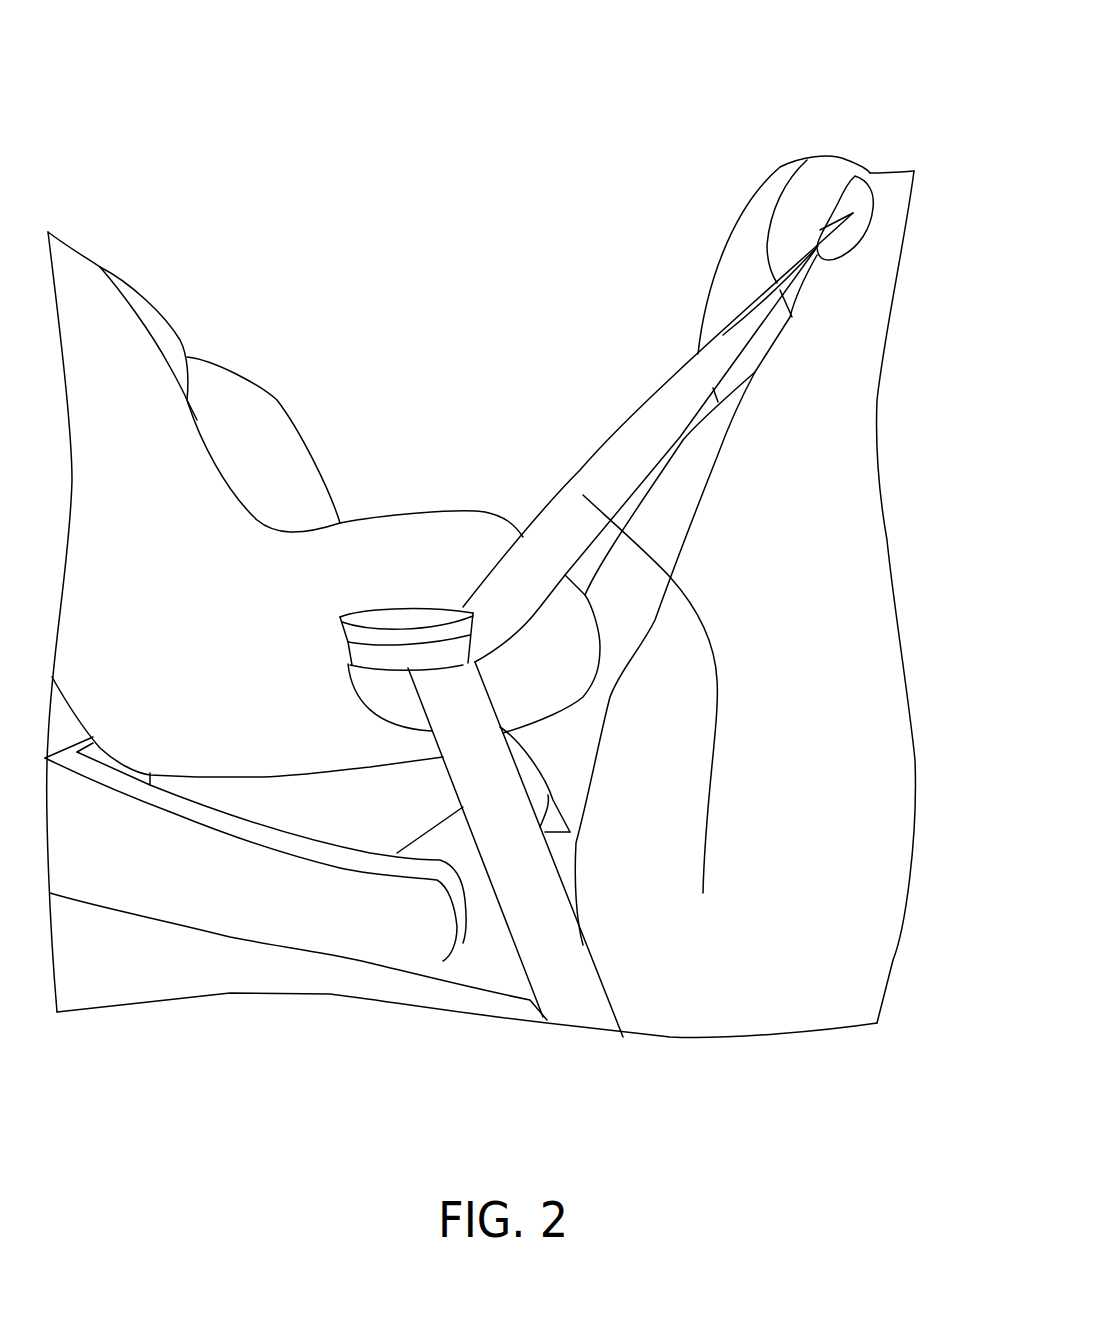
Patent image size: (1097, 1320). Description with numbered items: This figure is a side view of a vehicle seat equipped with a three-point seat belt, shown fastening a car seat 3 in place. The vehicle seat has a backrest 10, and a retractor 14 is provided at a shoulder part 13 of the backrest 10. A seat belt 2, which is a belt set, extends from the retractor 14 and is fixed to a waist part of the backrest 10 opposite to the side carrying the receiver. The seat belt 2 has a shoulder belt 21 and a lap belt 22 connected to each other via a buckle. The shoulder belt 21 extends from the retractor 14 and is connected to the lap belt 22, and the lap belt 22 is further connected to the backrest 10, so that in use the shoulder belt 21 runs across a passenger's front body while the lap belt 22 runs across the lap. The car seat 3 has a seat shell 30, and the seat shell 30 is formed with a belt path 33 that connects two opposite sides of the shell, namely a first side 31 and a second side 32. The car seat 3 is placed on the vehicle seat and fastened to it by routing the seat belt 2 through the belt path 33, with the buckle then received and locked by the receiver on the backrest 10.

The seat belt 2 is at (777, 1139).
The car seat 3 is at (847, 67).
The backrest 10 is at (850, 543).
The shoulder part 13 is at (808, 213).
The retractor 14 is at (852, 203).
The shoulder belt 21 is at (703, 893).
The lap belt 22 is at (537, 898).
The seat shell 30 is at (290, 164).
The first side 31 is at (122, 433).
The second side 32 is at (250, 433).
The belt path 33 is at (402, 682).